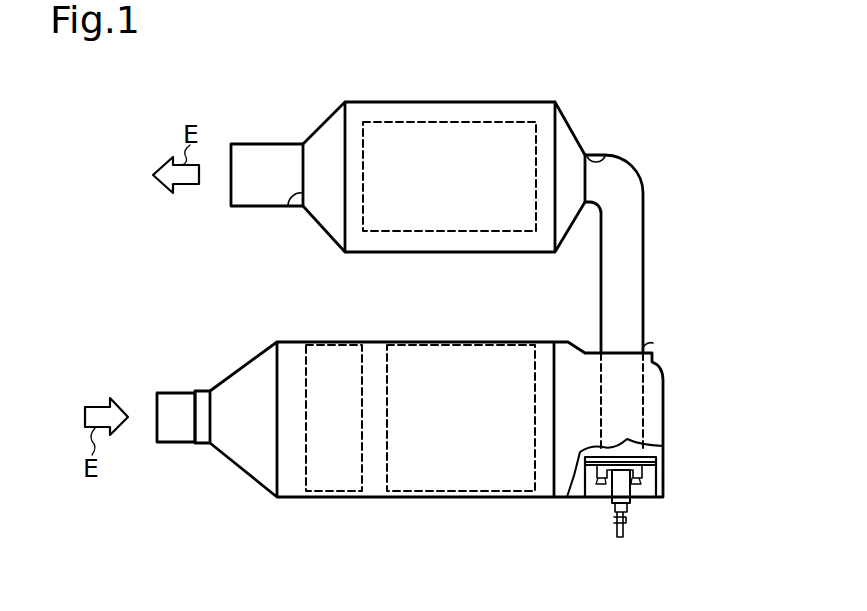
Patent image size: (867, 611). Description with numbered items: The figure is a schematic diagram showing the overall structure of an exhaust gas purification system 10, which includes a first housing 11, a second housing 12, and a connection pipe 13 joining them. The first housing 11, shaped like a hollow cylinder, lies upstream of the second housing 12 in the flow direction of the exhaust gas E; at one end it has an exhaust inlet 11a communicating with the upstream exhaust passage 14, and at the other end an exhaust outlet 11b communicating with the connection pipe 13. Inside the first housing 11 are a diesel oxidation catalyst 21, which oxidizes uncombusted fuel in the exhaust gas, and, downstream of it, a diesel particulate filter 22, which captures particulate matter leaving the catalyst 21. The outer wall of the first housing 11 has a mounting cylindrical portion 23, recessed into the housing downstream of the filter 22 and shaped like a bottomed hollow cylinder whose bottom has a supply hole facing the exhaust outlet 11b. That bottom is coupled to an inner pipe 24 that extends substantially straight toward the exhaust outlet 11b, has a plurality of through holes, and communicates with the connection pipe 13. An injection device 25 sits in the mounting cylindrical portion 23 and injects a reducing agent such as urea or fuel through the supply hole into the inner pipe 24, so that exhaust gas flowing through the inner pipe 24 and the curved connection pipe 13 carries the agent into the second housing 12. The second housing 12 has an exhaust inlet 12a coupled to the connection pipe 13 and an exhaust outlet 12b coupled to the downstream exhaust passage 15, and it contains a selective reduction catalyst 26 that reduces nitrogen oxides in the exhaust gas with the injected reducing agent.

The exhaust gas purification system 10 is at (713, 149).
The first housing 11 is at (234, 469).
The exhaust inlet 11a is at (197, 395).
The exhaust outlet 11b is at (648, 348).
The second housing 12 is at (413, 100).
The exhaust inlet 12a is at (605, 155).
The exhaust outlet 12b is at (293, 201).
The connection pipe 13 is at (600, 288).
The upstream exhaust passage 14 is at (157, 393).
The downstream exhaust passage 15 is at (265, 143).
The diesel oxidation catalyst 21 is at (328, 492).
The diesel particulate filter 22 is at (452, 493).
The mounting cylindrical portion 23 is at (657, 478).
The inner pipe 24 is at (645, 401).
The injection device 25 is at (624, 530).
The selective reduction catalyst 26 is at (502, 120).